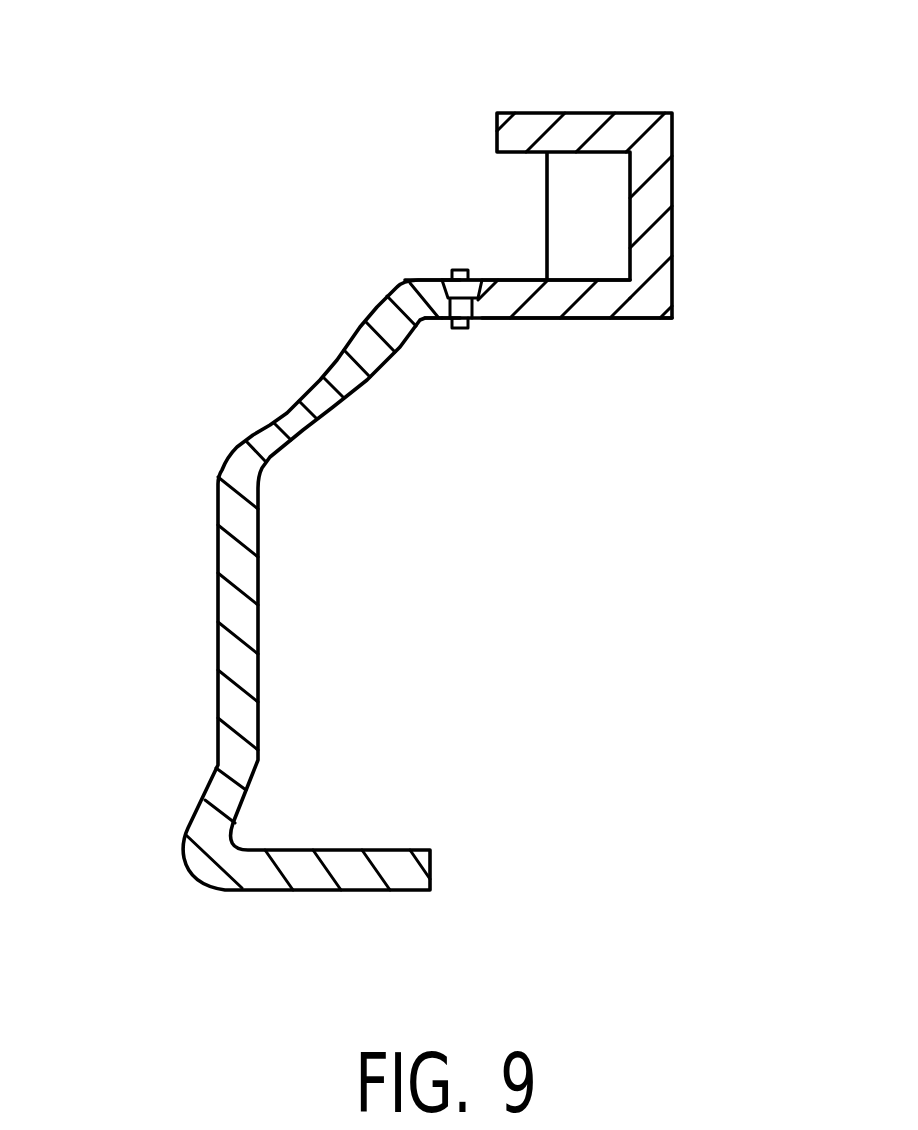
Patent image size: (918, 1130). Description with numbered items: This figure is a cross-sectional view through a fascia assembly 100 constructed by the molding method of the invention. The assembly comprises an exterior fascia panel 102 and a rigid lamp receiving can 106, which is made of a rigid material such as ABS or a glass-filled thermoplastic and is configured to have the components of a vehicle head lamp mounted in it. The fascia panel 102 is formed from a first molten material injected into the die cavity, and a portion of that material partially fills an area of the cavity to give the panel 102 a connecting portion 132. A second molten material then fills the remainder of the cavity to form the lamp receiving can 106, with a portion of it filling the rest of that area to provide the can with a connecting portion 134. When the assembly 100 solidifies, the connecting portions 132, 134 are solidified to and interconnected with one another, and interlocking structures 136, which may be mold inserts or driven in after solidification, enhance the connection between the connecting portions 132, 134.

The fascia assembly 100 is at (193, 188).
The exterior fascia panel 102 is at (248, 622).
The lamp receiving can 106 is at (642, 113).
The connecting portion 132 is at (408, 293).
The connecting portion 134 is at (510, 287).
The interlocking structures 136 is at (458, 328).